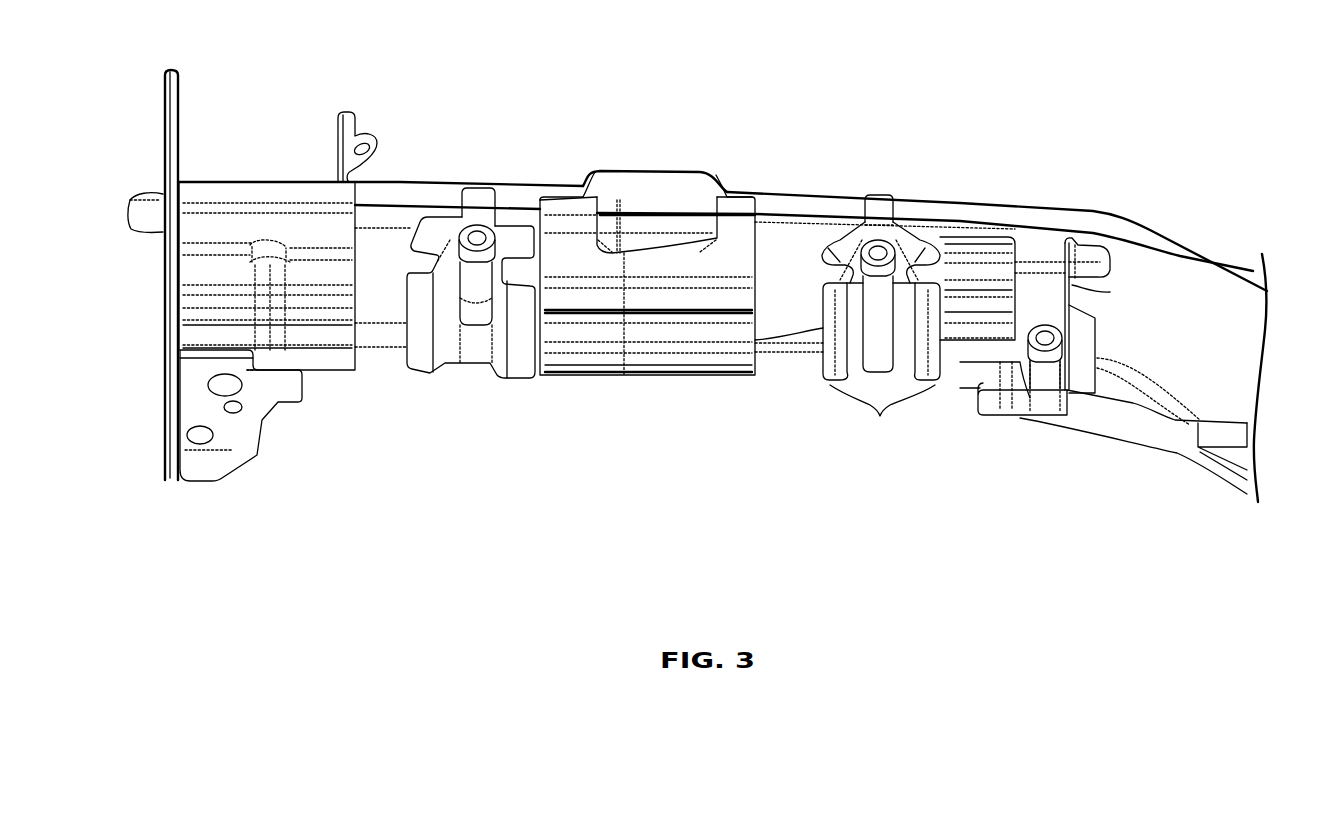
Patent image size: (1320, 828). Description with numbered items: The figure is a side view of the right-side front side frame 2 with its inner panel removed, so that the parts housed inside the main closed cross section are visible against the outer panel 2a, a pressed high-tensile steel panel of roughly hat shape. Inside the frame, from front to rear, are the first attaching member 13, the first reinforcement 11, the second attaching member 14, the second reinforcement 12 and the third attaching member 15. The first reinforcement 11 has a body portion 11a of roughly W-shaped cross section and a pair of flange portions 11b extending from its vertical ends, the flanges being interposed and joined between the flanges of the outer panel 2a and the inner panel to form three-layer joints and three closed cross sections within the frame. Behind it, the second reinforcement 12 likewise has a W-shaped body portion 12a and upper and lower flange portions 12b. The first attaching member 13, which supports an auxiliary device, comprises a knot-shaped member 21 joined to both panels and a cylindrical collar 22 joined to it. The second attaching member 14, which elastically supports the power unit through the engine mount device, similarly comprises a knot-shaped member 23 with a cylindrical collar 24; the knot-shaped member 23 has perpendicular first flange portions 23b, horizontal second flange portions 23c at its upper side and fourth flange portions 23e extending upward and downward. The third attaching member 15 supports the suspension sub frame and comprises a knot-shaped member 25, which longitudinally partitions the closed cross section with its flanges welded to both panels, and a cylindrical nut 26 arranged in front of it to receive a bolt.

The front side frame 2 is at (697, 286).
The outer panel 2a is at (393, 185).
The first reinforcement 11 is at (501, 301).
The body portion 11a is at (570, 368).
The flange portions 11b is at (572, 205).
The second reinforcement 12 is at (1010, 314).
The body portion 12a is at (990, 320).
The flange portions 12b is at (997, 247).
The first attaching member 13 is at (471, 300).
The second attaching member 14 is at (871, 304).
The third attaching member 15 is at (1102, 351).
The knot-shaped member 21 is at (432, 225).
The cylindrical collar 22 is at (492, 230).
The knot-shaped member 23 is at (871, 289).
The first flange portions 23b is at (882, 415).
The second flange portions 23c is at (834, 240).
The fourth flange portions 23e is at (877, 205).
The cylindrical collar 24 is at (882, 245).
The knot-shaped member 25 is at (1105, 292).
The cylindrical nut 26 is at (1048, 382).